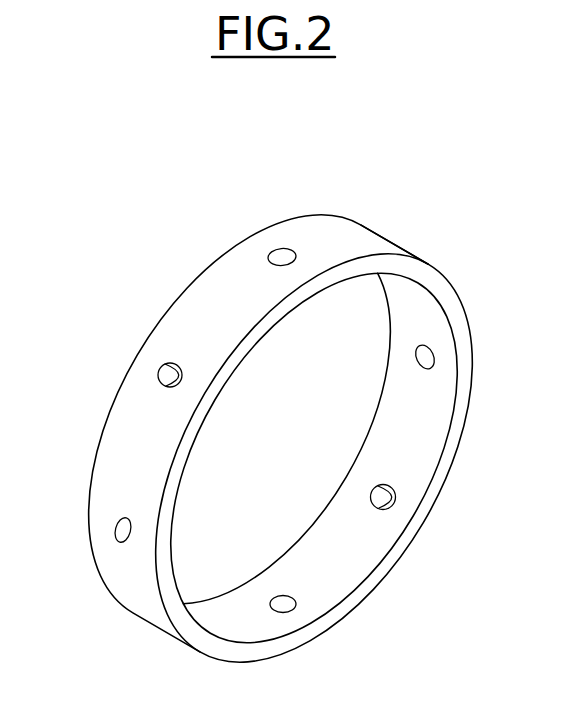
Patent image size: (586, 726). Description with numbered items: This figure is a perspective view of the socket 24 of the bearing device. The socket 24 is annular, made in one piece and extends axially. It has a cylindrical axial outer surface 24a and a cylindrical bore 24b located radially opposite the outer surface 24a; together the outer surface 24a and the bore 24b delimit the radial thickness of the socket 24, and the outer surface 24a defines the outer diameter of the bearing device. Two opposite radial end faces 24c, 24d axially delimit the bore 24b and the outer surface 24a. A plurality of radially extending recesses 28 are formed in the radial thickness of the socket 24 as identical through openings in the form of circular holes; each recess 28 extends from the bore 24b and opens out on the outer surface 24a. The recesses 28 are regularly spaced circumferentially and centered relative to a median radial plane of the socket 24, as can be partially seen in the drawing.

The socket 24 is at (119, 238).
The outer surface 24a is at (345, 228).
The bore 24b is at (417, 305).
The radial end face 24c is at (107, 430).
The radial end face 24d is at (382, 584).
The recesses 28 is at (283, 250).